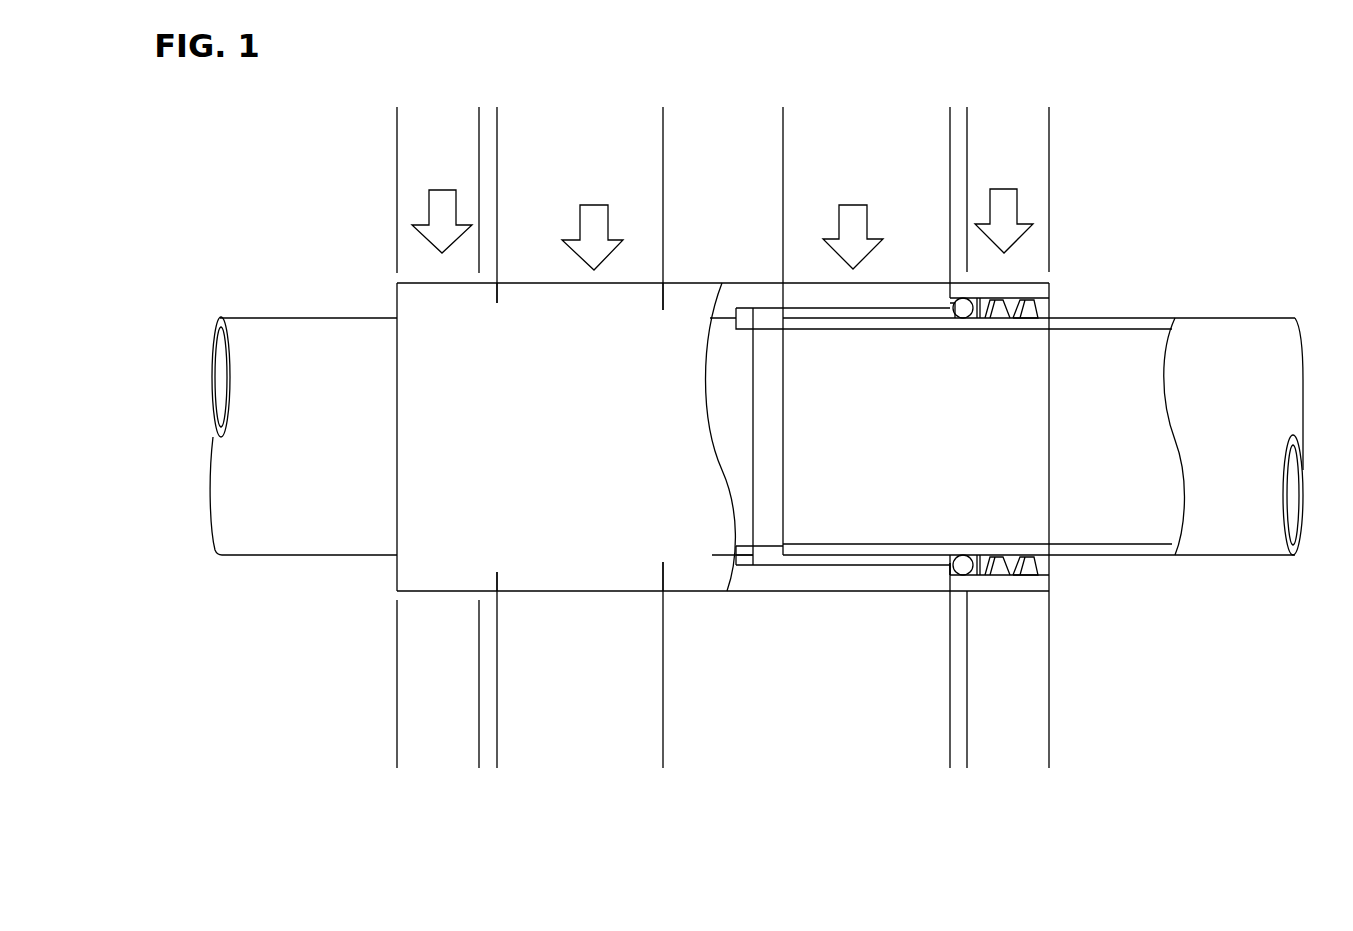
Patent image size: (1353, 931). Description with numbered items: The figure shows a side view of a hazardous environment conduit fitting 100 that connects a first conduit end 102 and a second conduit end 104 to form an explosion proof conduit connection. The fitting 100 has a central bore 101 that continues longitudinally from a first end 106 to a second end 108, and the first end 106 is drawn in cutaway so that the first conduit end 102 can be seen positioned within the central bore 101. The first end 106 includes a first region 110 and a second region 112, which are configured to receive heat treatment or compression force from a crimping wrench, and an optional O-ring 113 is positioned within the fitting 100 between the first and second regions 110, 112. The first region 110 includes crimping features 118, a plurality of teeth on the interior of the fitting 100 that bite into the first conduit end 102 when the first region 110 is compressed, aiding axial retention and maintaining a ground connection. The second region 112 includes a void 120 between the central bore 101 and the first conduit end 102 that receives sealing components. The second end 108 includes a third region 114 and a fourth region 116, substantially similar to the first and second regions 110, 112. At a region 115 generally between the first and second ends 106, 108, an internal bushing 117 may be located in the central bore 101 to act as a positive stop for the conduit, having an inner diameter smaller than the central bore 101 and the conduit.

The conduit fitting 100 is at (695, 577).
The central bore 101 is at (767, 300).
The first conduit end 102 is at (1237, 337).
The second conduit end 104 is at (287, 335).
The first end 106 is at (878, 578).
The second end 108 is at (447, 525).
The first region 110 is at (1012, 150).
The second region 112 is at (890, 135).
The O-ring 113 is at (960, 570).
The third region 114 is at (437, 128).
The region 115 is at (703, 133).
The fourth region 116 is at (570, 123).
The internal bushing 117 is at (745, 560).
The crimping features 118 is at (1005, 312).
The void 120 is at (806, 315).